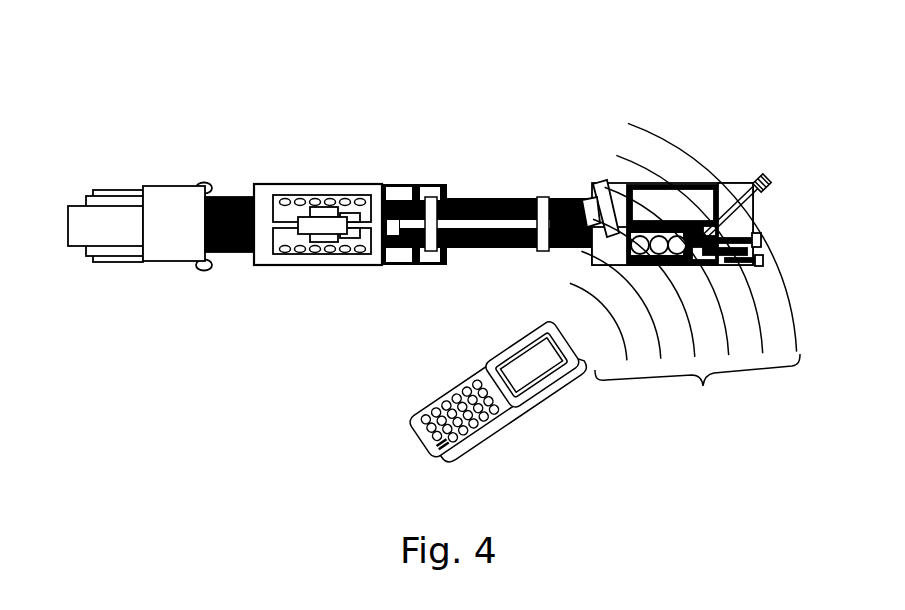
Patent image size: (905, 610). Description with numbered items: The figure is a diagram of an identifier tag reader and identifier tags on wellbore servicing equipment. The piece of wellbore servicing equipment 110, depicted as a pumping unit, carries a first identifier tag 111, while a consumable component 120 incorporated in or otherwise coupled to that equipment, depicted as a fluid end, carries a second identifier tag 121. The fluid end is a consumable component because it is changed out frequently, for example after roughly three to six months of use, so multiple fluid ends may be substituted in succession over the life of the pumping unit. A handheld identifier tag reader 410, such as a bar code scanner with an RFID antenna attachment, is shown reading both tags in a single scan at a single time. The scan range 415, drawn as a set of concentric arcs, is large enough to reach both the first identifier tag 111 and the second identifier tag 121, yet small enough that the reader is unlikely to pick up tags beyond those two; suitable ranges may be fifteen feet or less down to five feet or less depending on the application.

The pumping unit 110 is at (298, 100).
The fluid end 120 is at (698, 234).
The second identifier tag 121 is at (705, 234).
The first identifier tag 111 is at (768, 235).
The identifier tag reader 410 is at (540, 403).
The scan range 415 is at (685, 268).